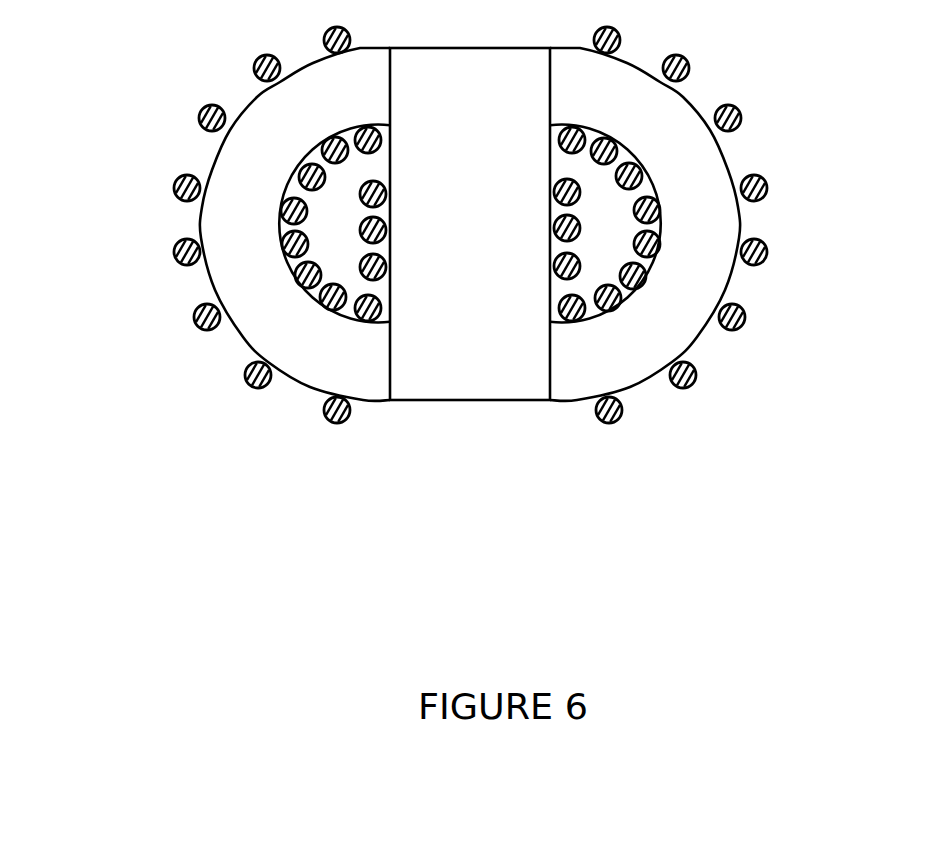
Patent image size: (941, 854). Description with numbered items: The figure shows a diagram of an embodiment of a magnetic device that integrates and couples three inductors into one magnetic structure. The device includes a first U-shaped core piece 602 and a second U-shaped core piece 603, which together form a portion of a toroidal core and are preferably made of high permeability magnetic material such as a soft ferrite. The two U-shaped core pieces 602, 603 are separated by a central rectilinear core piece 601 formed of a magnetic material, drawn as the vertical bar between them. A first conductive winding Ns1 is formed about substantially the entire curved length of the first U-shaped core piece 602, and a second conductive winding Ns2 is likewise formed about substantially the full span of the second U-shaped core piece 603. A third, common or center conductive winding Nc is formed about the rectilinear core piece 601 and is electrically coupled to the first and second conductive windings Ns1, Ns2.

The central rectilinear core piece 601 is at (495, 378).
The first U-shaped core piece 602 is at (360, 120).
The second U-shaped core piece 603 is at (625, 120).
The first conductive winding Ns1 is at (187, 113).
The second conductive winding Ns2 is at (758, 113).
The center conductive winding Nc is at (590, 244).